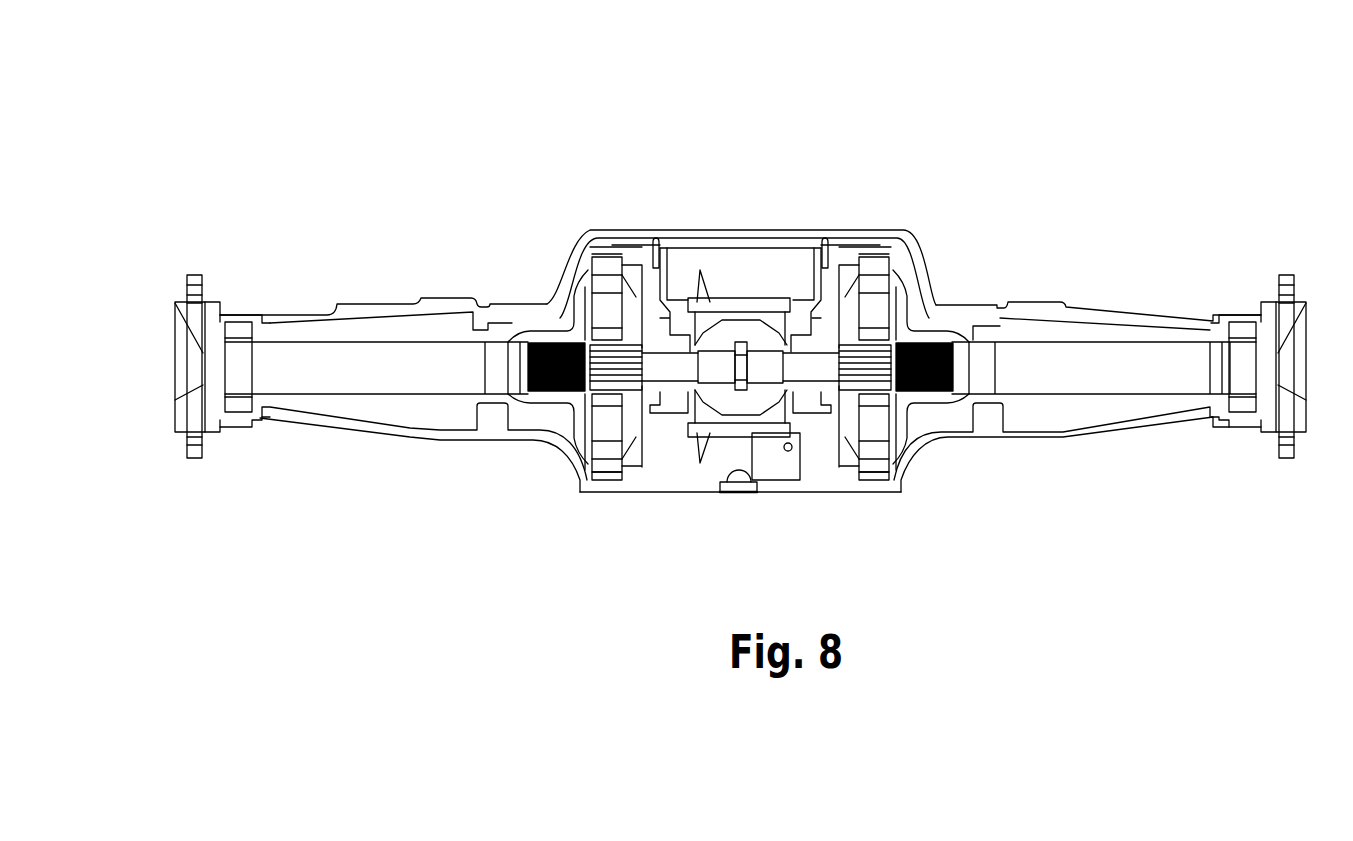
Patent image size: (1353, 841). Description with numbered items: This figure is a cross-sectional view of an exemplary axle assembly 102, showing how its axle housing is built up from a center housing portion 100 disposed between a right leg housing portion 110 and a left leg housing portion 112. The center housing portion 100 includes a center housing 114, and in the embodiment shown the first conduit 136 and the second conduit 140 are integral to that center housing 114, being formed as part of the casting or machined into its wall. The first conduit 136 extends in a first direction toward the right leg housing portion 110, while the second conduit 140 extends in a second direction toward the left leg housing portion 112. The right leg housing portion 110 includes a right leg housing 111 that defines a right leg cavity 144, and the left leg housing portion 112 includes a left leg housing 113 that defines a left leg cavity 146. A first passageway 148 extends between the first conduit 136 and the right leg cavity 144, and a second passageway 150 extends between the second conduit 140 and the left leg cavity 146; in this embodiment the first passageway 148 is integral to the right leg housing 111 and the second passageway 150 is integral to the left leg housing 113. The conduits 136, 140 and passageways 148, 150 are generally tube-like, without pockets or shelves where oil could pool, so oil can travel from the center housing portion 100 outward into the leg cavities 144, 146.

The center housing portion 100 is at (915, 218).
The axle assembly 102 is at (1040, 208).
The right leg housing portion 110 is at (1268, 277).
The right leg housing 111 is at (1025, 438).
The left leg housing portion 112 is at (218, 277).
The left leg housing 113 is at (340, 428).
The center housing 114 is at (707, 228).
The first conduit 136 is at (807, 237).
The second conduit 140 is at (642, 240).
The right leg cavity 144 is at (1142, 332).
The left leg cavity 146 is at (330, 333).
The first passageway 148 is at (938, 303).
The second passageway 150 is at (556, 302).